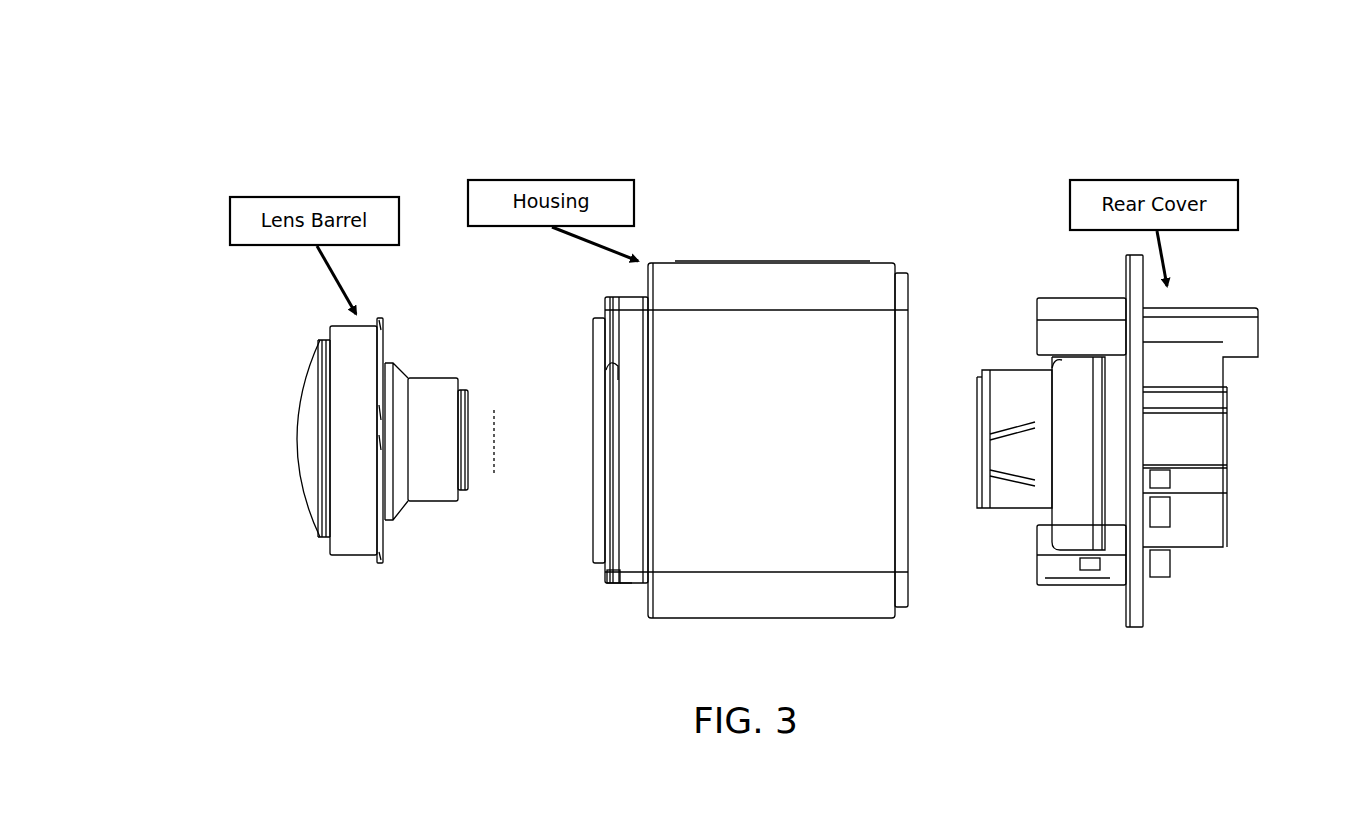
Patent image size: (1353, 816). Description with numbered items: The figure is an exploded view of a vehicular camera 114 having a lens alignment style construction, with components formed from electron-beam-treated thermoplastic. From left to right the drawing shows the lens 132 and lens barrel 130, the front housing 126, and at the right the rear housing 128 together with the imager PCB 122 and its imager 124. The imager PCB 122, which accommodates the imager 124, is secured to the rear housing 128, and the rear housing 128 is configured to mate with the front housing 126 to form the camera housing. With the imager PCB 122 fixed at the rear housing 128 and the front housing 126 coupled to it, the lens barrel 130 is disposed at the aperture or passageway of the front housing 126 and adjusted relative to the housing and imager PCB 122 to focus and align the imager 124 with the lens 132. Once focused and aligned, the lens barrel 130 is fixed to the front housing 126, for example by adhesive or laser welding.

The camera 114 is at (1072, 145).
The imager PCB 122 is at (1133, 618).
The imager 124 is at (1117, 455).
The front housing 126 is at (835, 273).
The rear housing 128 is at (1195, 537).
The lens barrel 130 is at (358, 537).
The lens 132 is at (303, 437).